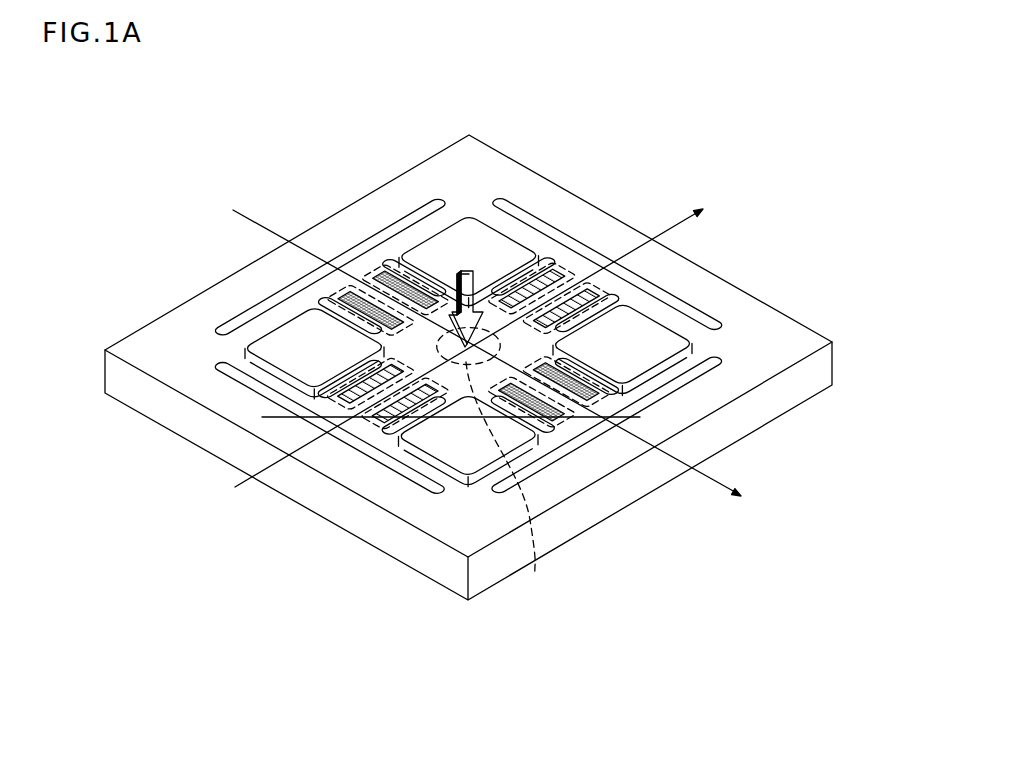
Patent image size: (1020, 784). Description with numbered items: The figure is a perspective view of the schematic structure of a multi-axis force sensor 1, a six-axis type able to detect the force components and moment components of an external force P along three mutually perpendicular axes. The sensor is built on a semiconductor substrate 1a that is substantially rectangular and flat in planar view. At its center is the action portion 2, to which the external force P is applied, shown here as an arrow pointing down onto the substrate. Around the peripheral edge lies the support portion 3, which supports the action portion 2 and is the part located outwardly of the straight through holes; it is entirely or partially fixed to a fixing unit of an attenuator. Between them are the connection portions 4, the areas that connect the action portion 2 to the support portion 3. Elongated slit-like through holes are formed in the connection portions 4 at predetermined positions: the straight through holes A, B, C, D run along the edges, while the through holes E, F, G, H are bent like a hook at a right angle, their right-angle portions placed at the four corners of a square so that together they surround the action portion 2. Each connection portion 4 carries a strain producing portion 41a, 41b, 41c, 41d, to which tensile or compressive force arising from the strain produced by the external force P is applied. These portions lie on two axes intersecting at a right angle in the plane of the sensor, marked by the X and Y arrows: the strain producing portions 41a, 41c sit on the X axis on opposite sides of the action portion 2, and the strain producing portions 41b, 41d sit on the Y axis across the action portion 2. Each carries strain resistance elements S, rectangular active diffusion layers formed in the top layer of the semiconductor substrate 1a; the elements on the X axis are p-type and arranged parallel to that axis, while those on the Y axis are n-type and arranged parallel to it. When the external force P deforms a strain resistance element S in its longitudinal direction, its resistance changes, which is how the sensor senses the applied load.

The multi-axis force sensor 1 is at (628, 128).
The semiconductor substrate 1a is at (592, 506).
The action portion 2 is at (481, 460).
The support portion 3 is at (355, 215).
The connection portion 4 is at (573, 277).
The strain producing portion 41a is at (592, 447).
The strain producing portion 41b is at (610, 273).
The strain producing portion 41c is at (352, 283).
The strain producing portion 41d is at (362, 432).
The external force P is at (466, 295).
The X-axis X is at (489, 360).
The Y-axis Y is at (479, 339).
The strain resistance element S is at (262, 417).
The straight through hole A is at (677, 389).
The straight through hole B is at (713, 318).
The straight through hole C is at (254, 302).
The straight through hole D is at (407, 484).
The hook-shaped through hole E is at (478, 478).
The hook-shaped through hole F is at (692, 352).
The hook-shaped through hole G is at (468, 216).
The hook-shaped through hole H is at (241, 347).